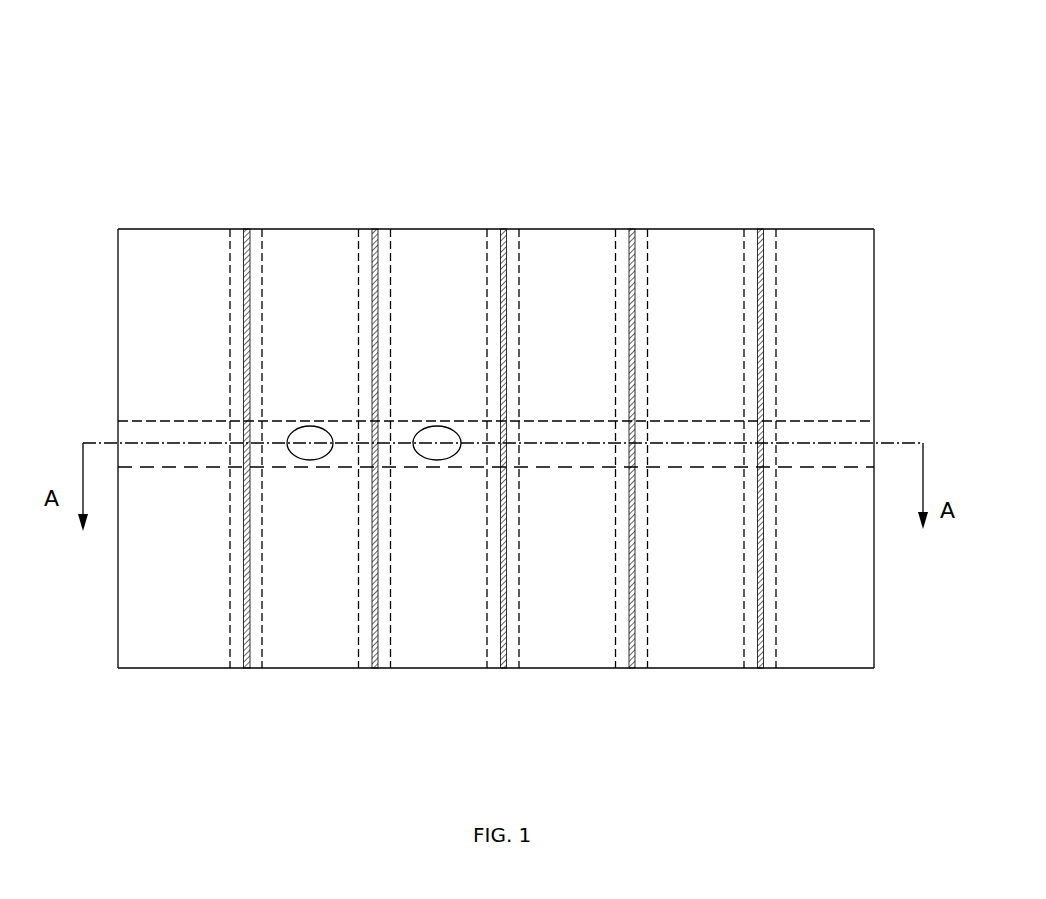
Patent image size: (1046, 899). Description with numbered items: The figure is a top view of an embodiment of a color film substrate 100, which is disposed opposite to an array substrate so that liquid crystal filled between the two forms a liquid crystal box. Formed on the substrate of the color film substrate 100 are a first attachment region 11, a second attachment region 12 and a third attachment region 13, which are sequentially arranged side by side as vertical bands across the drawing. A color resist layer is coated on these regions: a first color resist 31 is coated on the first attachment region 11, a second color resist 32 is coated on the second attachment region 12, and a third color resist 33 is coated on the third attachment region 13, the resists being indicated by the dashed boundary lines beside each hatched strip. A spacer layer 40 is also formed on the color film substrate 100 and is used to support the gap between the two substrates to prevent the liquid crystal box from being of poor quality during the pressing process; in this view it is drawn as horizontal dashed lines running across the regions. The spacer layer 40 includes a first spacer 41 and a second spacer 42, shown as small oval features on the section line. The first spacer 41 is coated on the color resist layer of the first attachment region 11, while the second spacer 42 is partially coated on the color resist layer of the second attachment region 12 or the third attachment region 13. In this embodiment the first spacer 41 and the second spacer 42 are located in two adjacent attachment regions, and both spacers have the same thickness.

The color film substrate 100 is at (578, 43).
The first attachment region 11 is at (428, 264).
The second attachment region 12 is at (302, 262).
The third attachment region 13 is at (150, 262).
The first color resist 31 is at (466, 262).
The second color resist 32 is at (333, 266).
The third color resist 33 is at (191, 272).
The spacer layer 40 is at (445, 448).
The first spacer 41 is at (433, 447).
The second spacer 42 is at (290, 432).